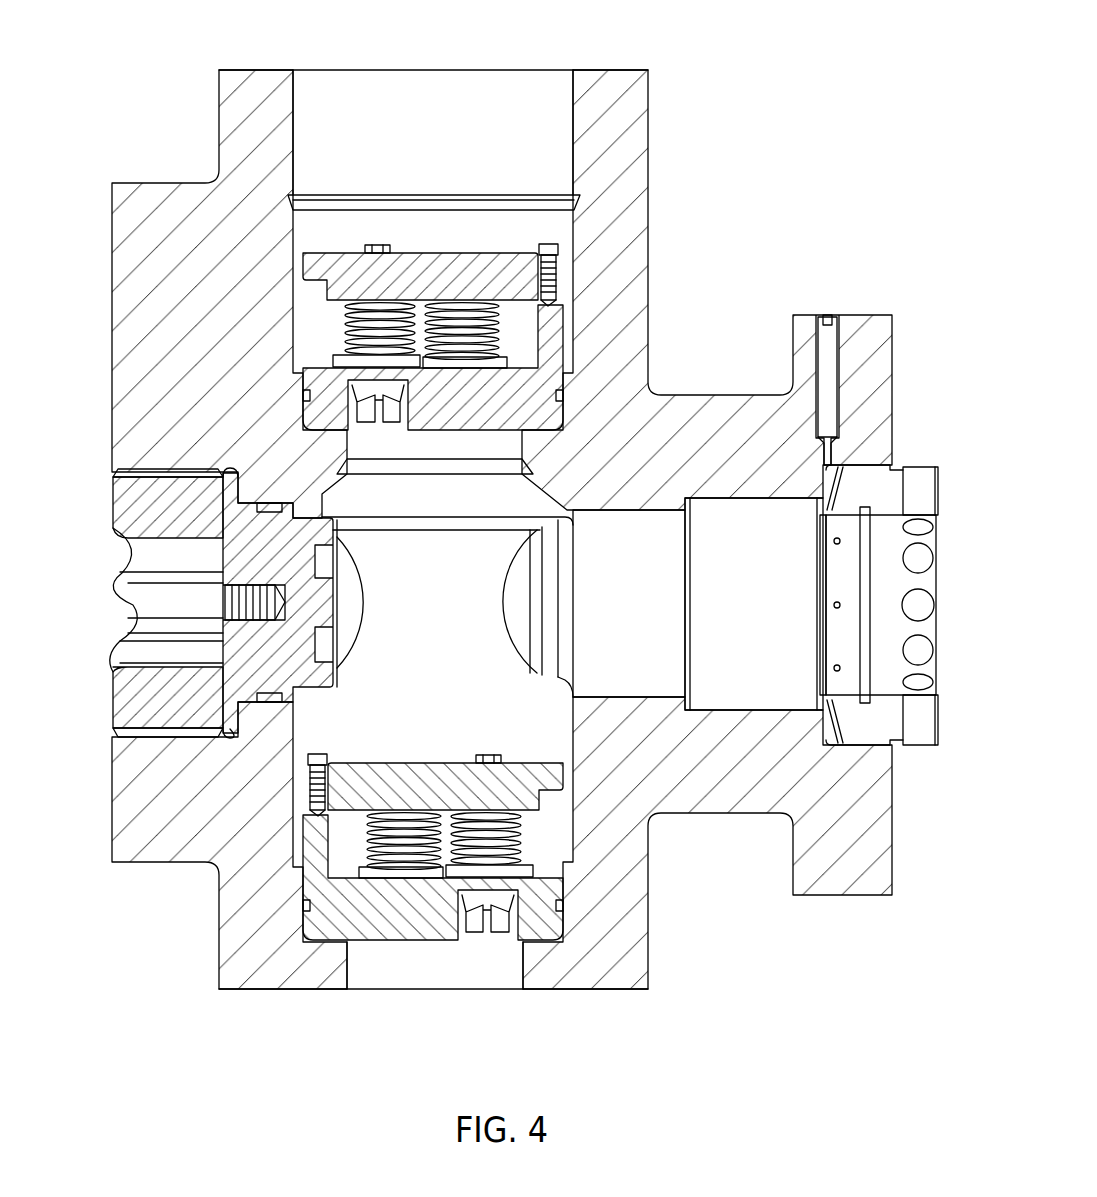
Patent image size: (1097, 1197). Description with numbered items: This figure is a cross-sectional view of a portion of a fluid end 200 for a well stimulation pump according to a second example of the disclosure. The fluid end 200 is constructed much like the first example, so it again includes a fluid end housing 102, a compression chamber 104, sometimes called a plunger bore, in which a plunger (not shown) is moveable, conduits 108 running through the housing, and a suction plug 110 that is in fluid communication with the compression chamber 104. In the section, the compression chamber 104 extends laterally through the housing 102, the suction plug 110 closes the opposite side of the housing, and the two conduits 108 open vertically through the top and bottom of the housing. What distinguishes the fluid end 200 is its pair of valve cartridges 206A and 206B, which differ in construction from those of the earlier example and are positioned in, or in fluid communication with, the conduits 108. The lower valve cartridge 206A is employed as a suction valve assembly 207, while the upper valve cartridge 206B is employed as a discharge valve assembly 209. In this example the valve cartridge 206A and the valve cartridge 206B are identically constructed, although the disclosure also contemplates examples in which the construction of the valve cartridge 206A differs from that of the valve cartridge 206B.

The fluid end housing 102 is at (168, 210).
The compression chamber 104 is at (613, 532).
The conduit 108 is at (422, 90).
The suction plug 110 is at (268, 547).
The fluid end 200 is at (848, 52).
The valve cartridge 206A is at (524, 868).
The valve cartridge 206B is at (527, 299).
The suction valve assembly 207 is at (572, 890).
The discharge valve assembly 209 is at (577, 262).